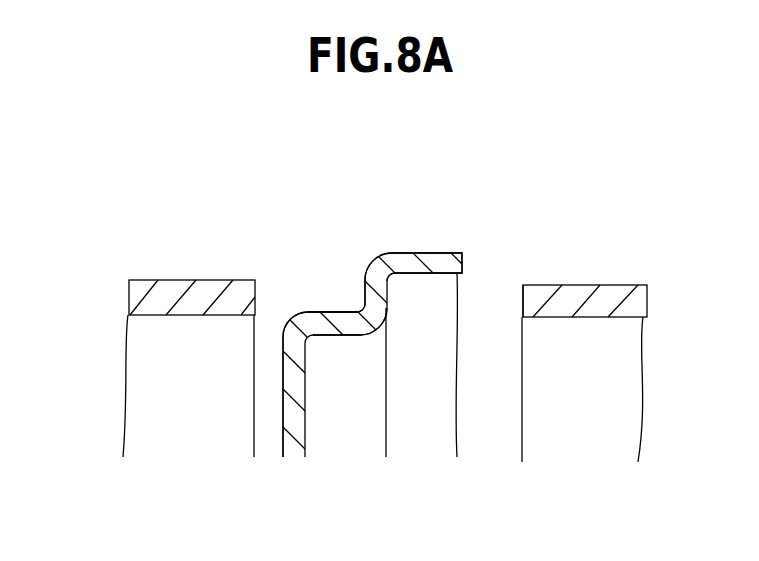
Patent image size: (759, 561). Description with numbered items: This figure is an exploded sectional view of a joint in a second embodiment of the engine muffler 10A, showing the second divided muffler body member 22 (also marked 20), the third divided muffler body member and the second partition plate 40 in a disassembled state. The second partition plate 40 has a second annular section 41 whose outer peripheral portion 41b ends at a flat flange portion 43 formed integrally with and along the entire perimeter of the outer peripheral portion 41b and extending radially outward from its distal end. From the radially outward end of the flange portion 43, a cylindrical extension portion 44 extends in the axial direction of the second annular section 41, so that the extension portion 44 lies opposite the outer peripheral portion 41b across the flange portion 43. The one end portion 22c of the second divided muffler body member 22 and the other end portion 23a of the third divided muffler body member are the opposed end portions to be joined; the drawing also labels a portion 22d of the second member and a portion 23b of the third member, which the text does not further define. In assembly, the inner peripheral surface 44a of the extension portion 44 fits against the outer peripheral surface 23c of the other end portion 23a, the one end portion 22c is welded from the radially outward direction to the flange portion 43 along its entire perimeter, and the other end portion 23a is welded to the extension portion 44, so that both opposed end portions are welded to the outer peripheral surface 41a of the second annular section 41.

The engine muffler 10A is at (210, 145).
The member 20 is at (415, 311).
The second divided muffler body member 22 is at (171, 277).
The one end portion 22c is at (240, 296).
The side face of plate portion 22d is at (212, 317).
The other end portion 23a is at (573, 293).
The side face of second plate portion 23b is at (545, 317).
The outer peripheral surface 23c is at (532, 283).
The second partition plate 40 is at (292, 447).
The second annular section 41 is at (320, 318).
The outer peripheral surface 41a is at (345, 322).
The outer peripheral portion 41b is at (352, 327).
The flange portion 43 is at (378, 283).
The extension portion 44 is at (433, 262).
The inner peripheral surface 44a is at (412, 279).